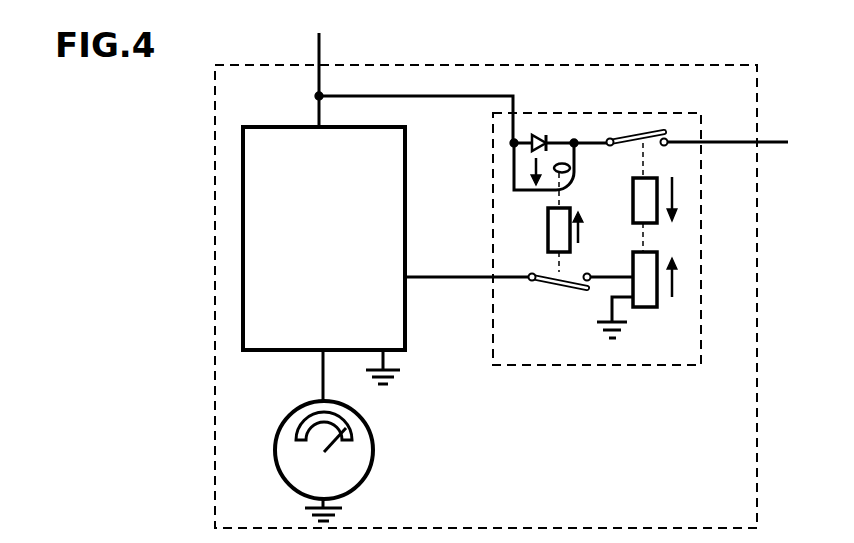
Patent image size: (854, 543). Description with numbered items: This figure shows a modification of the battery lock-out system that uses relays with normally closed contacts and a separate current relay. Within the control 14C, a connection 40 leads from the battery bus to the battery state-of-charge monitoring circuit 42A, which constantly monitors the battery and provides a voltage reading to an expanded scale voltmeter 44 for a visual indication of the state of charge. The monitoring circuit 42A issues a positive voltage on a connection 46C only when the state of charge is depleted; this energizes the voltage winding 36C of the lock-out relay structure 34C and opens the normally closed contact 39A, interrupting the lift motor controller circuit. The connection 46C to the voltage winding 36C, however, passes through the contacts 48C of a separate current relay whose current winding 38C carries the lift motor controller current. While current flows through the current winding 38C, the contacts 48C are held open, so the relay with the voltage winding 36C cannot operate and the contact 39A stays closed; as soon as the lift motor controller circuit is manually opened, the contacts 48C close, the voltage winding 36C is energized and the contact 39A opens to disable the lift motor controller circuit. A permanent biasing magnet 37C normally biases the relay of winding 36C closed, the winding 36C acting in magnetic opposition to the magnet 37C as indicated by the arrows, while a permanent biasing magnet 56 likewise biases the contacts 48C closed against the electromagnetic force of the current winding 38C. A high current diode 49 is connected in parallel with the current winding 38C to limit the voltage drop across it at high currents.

The vehicle electrical system (dashed enclosure) 14C is at (385, 65).
The connection 40 is at (379, 96).
The battery state-of-charge monitoring circuit 42A is at (405, 193).
The connection 46C is at (460, 277).
The relay assembly (dashed enclosure) 34C is at (565, 365).
The diode 49 is at (541, 135).
The current winding 38C is at (571, 168).
The permanent biasing magnet 56 is at (548, 234).
The contacts 48C is at (568, 292).
The permanent biasing magnet 37C is at (633, 205).
The voltage winding 36C is at (643, 308).
The normally closed contact 39A is at (635, 135).
The expanded scale voltmeter 44 is at (372, 425).